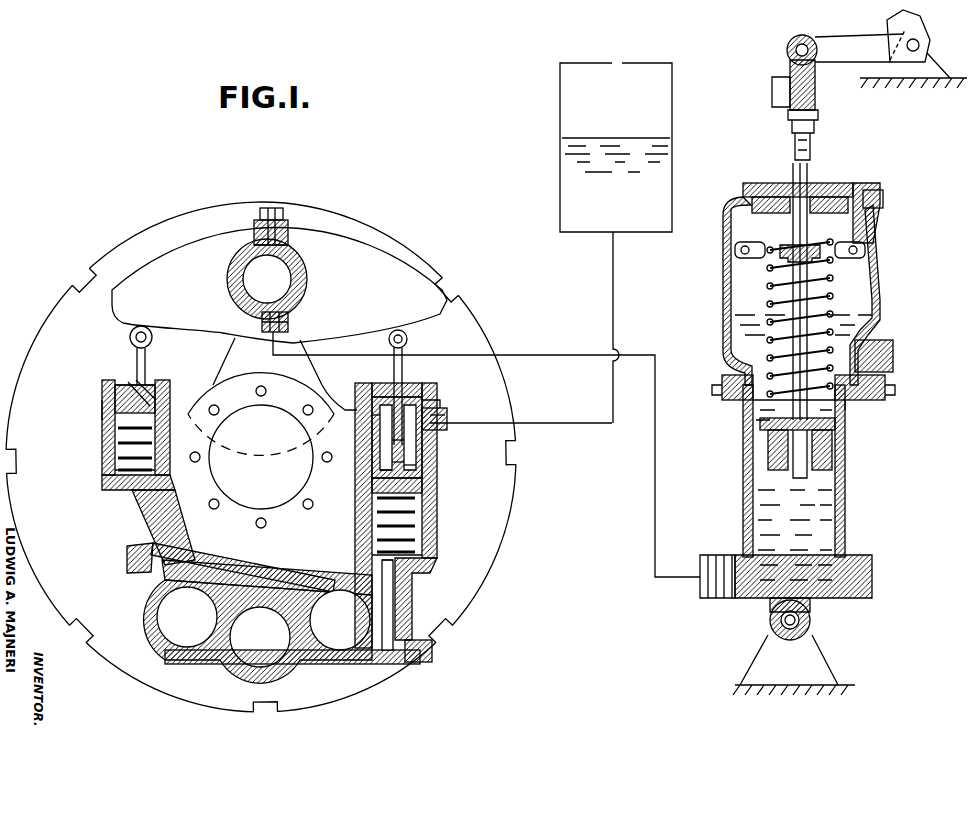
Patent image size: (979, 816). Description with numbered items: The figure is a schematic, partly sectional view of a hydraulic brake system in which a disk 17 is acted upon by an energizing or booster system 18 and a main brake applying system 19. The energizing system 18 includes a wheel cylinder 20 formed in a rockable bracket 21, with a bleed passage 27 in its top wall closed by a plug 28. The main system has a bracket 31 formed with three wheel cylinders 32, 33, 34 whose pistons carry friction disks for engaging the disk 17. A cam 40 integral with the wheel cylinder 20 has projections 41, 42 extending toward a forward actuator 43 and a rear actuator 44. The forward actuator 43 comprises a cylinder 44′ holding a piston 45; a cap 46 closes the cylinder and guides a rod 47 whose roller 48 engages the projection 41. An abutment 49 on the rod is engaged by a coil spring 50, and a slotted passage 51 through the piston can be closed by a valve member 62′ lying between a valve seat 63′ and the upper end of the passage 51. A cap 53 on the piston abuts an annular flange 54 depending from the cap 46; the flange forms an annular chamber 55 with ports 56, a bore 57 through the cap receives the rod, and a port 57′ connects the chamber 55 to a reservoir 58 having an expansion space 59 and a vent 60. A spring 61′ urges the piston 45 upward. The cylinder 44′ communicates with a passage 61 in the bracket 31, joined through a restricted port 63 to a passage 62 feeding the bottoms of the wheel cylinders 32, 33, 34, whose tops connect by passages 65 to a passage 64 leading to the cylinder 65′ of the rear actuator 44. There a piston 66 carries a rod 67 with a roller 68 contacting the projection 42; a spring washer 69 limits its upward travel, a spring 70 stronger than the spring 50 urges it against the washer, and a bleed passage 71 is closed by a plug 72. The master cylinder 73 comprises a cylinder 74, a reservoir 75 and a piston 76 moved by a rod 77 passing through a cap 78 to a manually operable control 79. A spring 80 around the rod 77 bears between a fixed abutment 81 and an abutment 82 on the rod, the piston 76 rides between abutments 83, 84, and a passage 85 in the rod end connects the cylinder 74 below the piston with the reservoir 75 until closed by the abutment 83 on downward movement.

The disk 17 is at (225, 705).
The energizing or booster system 18 is at (309, 234).
The main brake applying system 19 is at (434, 597).
The wheel cylinder 20 is at (323, 265).
The bracket 21 is at (306, 352).
The bleed passage 27 is at (268, 252).
The plug 28 is at (266, 208).
The bracket 31 is at (314, 563).
The wheel cylinder 32 is at (340, 620).
The wheel cylinder 33 is at (260, 637).
The wheel cylinder 34 is at (187, 617).
The cam 40 is at (384, 286).
The projection 41 is at (430, 308).
The projection 42 is at (146, 298).
The forward hydraulic actuator 43 is at (447, 508).
The rear hydraulic actuator 44 is at (96, 461).
The cylinder 44′ is at (432, 550).
The piston 45 is at (405, 452).
The cap 46 is at (410, 390).
The rod 47 is at (394, 375).
The roller 48 is at (407, 338).
The abutment 49 is at (422, 485).
The coil spring 50 is at (420, 532).
The passage 51 is at (412, 470).
The cap 53 is at (420, 432).
The annular flange 54 is at (372, 420).
The annular chamber 55 is at (395, 450).
The ports 56 is at (422, 412).
The bore 57 is at (432, 438).
The port 57′ is at (436, 418).
The reservoir 58 is at (572, 185).
The expansion space 59 is at (668, 122).
The vent 60 is at (615, 63).
The passage 61 is at (428, 648).
The spring 61′ is at (390, 466).
The passage 62 is at (380, 664).
The valve member 62′ is at (387, 477).
The restricted port 63 is at (400, 660).
The valve seat 63′ is at (358, 562).
The passage 64 is at (152, 510).
The passages 65 is at (192, 568).
The cylinder 65′ is at (103, 408).
The piston 66 is at (152, 385).
The rod 67 is at (136, 357).
The roller 68 is at (130, 336).
The spring washer 69 is at (114, 388).
The spring 70 is at (125, 468).
The bleed passage 71 is at (125, 412).
The plug 72 is at (122, 382).
The master cylinder 73 is at (873, 283).
The cylinder 74 is at (845, 468).
The reservoir 75 is at (855, 312).
The piston 76 is at (830, 432).
The rod 77 is at (770, 410).
The cap 78 is at (820, 185).
The manually operable control 79 is at (925, 25).
The spring 80 is at (770, 287).
The fixed abutment 81 is at (738, 397).
The abutment 82 is at (778, 258).
The abutment 83 is at (850, 420).
The abutment 84 is at (810, 470).
The passage 85 is at (770, 470).